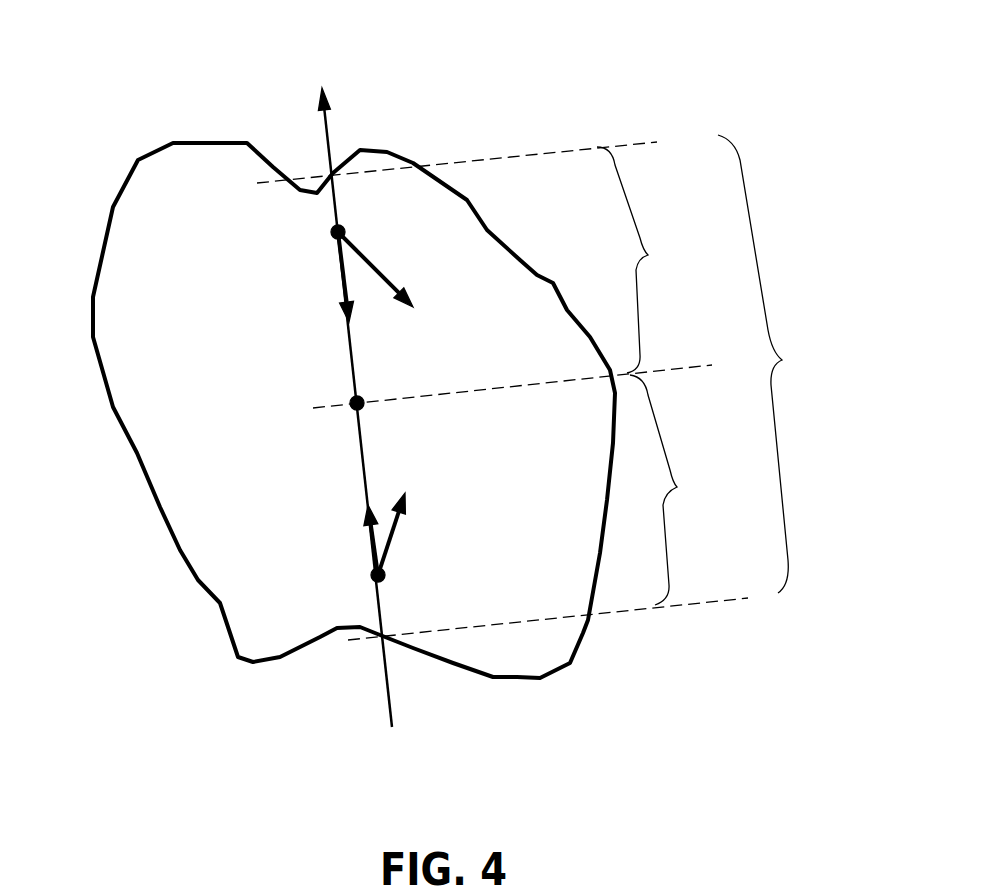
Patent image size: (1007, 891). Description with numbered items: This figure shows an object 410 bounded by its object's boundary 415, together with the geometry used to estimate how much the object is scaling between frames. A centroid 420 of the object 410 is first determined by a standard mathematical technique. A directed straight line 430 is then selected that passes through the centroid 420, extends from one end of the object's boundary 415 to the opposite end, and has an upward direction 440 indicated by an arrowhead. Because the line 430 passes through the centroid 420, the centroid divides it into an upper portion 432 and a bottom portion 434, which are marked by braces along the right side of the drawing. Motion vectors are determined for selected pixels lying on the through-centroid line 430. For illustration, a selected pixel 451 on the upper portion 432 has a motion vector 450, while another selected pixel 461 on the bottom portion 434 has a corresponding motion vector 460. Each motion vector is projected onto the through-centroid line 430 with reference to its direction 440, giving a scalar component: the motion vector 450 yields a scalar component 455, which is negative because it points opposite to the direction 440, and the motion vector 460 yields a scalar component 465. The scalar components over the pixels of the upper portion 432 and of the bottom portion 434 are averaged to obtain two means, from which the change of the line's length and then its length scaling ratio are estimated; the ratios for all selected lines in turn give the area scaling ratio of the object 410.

The object 410 is at (376, 405).
The object's boundary 415 is at (138, 167).
The centroid 420 is at (345, 401).
The directed straight line 430 is at (553, 387).
The upper portion 432 is at (657, 260).
The bottom portion 434 is at (691, 490).
The direction 440 is at (332, 112).
The motion vector 450 is at (367, 253).
The selected pixel 451 is at (330, 230).
The scalar component 455 is at (337, 279).
The motion vector 460 is at (393, 540).
The selected pixel 461 is at (370, 577).
The scalar component 465 is at (365, 533).